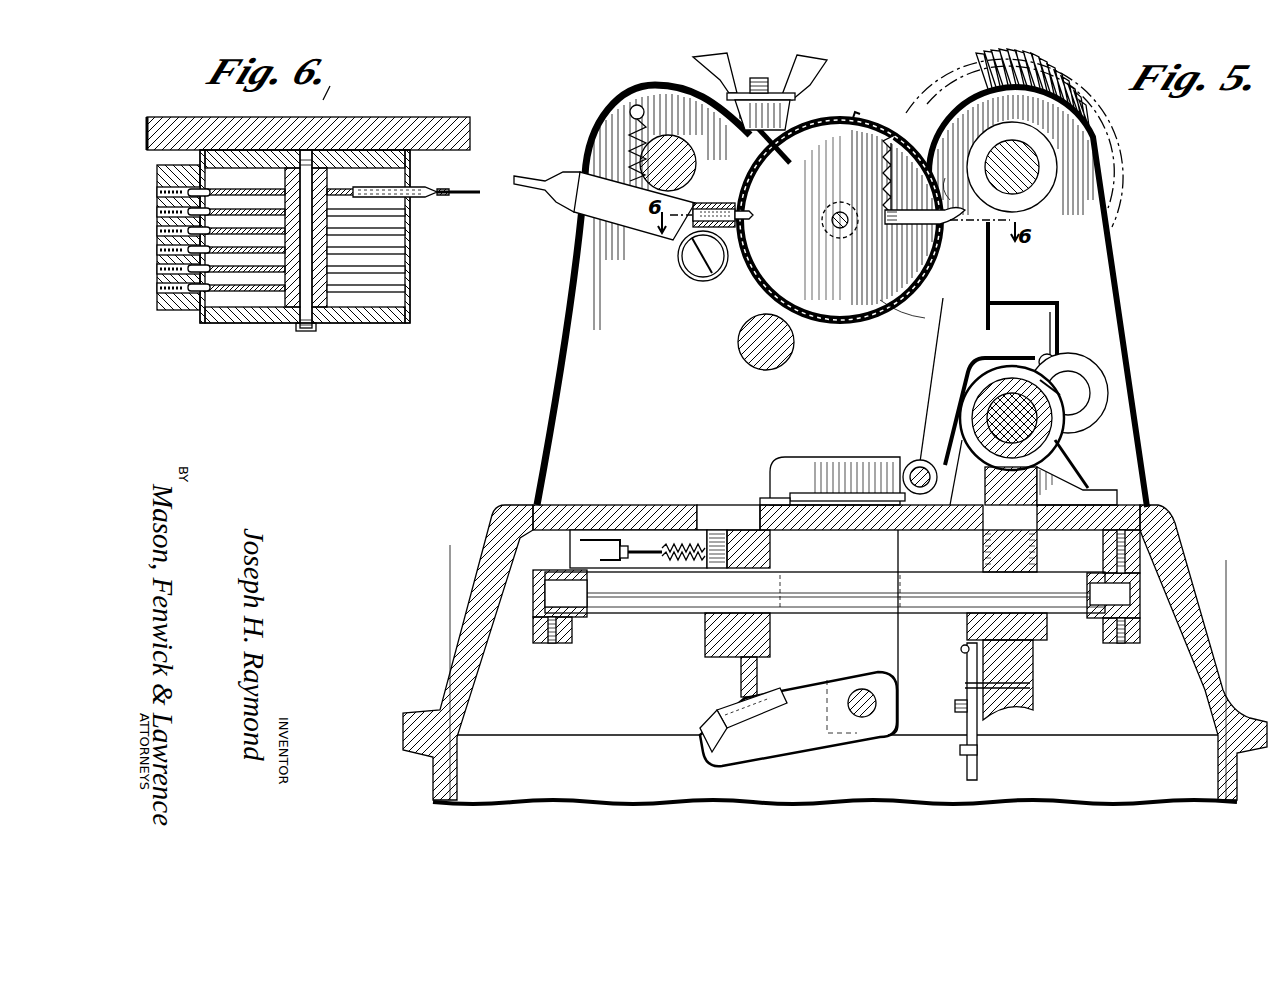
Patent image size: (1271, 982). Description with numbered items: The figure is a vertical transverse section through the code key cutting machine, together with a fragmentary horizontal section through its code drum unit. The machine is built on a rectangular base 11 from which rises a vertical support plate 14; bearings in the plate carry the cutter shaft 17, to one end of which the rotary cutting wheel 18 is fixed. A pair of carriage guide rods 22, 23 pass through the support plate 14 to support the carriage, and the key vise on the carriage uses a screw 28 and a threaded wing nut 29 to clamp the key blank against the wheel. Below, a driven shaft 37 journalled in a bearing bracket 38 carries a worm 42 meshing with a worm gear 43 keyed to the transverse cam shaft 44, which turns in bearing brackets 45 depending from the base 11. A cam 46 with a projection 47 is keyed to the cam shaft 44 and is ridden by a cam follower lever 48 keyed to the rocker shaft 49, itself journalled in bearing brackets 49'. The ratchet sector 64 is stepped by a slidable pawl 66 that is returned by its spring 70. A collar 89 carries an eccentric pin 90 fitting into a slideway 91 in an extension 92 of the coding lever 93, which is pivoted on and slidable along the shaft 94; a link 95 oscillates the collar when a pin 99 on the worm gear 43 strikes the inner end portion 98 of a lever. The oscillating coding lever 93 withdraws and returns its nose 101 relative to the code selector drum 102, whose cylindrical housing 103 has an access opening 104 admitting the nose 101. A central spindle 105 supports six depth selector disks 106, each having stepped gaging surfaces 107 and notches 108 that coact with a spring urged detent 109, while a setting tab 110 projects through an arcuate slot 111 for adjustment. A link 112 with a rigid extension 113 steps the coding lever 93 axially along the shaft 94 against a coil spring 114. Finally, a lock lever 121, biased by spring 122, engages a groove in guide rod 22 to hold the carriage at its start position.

In FIG. 5, the base 11 is at (1188, 548).
In FIG. 5, the support plate 14 is at (1098, 292).
In FIG. 5, the cutter shaft 17 is at (1030, 175).
In FIG. 5, the rotary cutting wheel 18 is at (978, 60).
In FIG. 5, the carriage guide rod 22 is at (690, 150).
In FIG. 5, the carriage guide rod 23 is at (738, 345).
In FIG. 5, the screw 28 is at (760, 78).
In FIG. 5, the threaded wing nut 29 is at (818, 80).
In FIG. 5, the driven shaft 37 is at (986, 407).
In FIG. 5, the bearing bracket 38 is at (1072, 468).
In FIG. 5, the worm 42 is at (1062, 440).
In FIG. 5, the worm gear 43 is at (1020, 662).
In FIG. 5, the cam shaft 44 is at (928, 606).
In FIG. 5, the bearing brackets 45 is at (574, 638).
In FIG. 5, the cam 46 is at (708, 640).
In FIG. 5, the projection 47 is at (743, 678).
In FIG. 5, the cam follower lever 48 is at (799, 738).
In FIG. 5, the rocker shaft 49 is at (860, 725).
In FIG. 5, the bearing brackets 49' is at (878, 632).
In FIG. 5, the ratchet sector 64 is at (615, 542).
In FIG. 5, the pawl 66 is at (632, 535).
In FIG. 5, the spring 70 is at (683, 547).
In FIG. 5, the collar 89 is at (1074, 354).
In FIG. 5, the eccentric pin 90 is at (1040, 356).
In FIG. 5, the slideway 91 is at (1045, 306).
In FIG. 5, the extension 92 is at (1008, 318).
In FIG. 6, the coding lever 93 is at (455, 196).
In FIG. 5, the coding lever 93 is at (931, 342).
In FIG. 5, the shaft 94 is at (912, 465).
In FIG. 5, the link 95 is at (983, 735).
In FIG. 5, the inner end portion 98 is at (961, 650).
In FIG. 5, the pin 99 is at (965, 686).
In FIG. 6, the nose 101 is at (425, 198).
In FIG. 5, the nose 101 is at (913, 226).
In FIG. 5, the code selector drum 102 is at (852, 337).
In FIG. 6, the cylindrical housing 103 is at (200, 322).
In FIG. 5, the cylindrical housing 103 is at (756, 283).
In FIG. 6, the access opening 104 is at (410, 300).
In FIG. 5, the access opening 104 is at (952, 176).
In FIG. 6, the spindle 105 is at (327, 325).
In FIG. 5, the spindle 105 is at (840, 228).
In FIG. 6, the depth selector disks 106 is at (410, 283).
In FIG. 5, the depth selector disks 106 is at (893, 302).
In FIG. 5, the gaging surfaces 107 is at (888, 190).
In FIG. 5, the notches 108 is at (756, 224).
In FIG. 6, the detent 109 is at (212, 271).
In FIG. 5, the detent 109 is at (740, 214).
In FIG. 5, the setting tab 110 is at (740, 115).
In FIG. 5, the arcuate slot 111 is at (856, 117).
In FIG. 5, the link 112 is at (770, 485).
In FIG. 5, the rigid extension 113 is at (826, 463).
In FIG. 5, the coil spring 114 is at (928, 466).
In FIG. 5, the lock lever 121 is at (636, 225).
In FIG. 5, the spring 122 is at (650, 138).